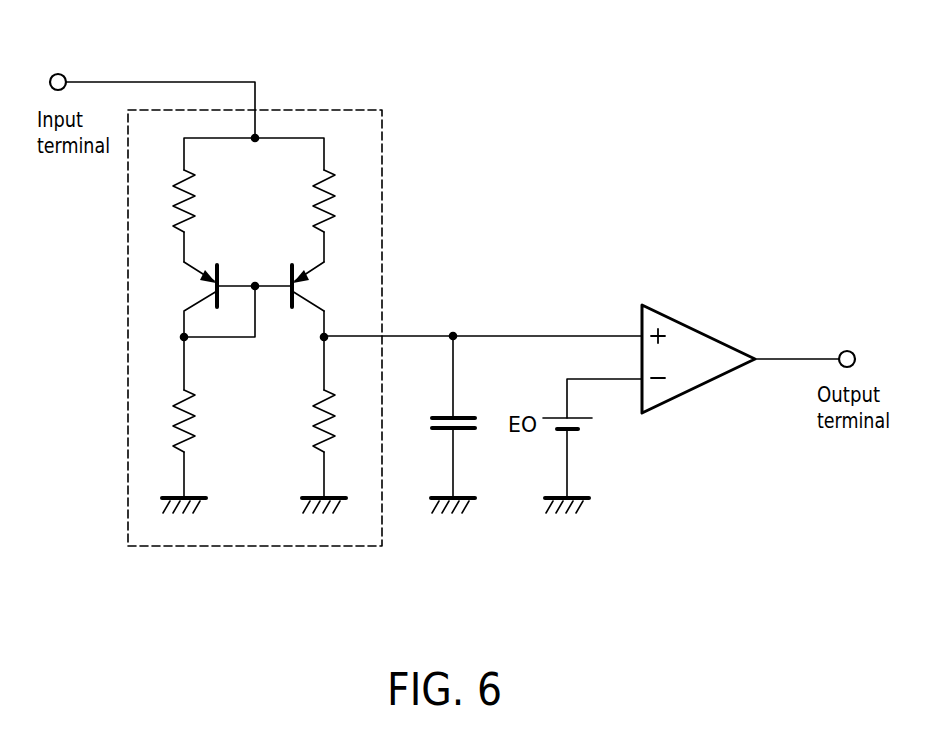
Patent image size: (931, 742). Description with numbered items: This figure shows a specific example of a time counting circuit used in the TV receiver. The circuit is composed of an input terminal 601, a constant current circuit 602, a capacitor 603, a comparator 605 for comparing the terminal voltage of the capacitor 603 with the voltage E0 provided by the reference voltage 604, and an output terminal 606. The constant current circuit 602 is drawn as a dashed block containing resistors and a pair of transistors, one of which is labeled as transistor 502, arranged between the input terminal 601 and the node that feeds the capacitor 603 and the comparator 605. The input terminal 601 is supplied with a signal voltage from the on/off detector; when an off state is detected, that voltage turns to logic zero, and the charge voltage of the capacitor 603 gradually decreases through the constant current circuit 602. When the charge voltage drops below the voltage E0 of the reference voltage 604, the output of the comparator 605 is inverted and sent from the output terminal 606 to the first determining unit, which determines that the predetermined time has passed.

The input terminal 601 is at (57, 73).
The constant current circuit 602 is at (318, 108).
The transistor 502 is at (338, 298).
The capacitor 603 is at (474, 410).
The reference voltage 604 is at (592, 424).
The comparator 605 is at (700, 330).
The output terminal 606 is at (843, 350).